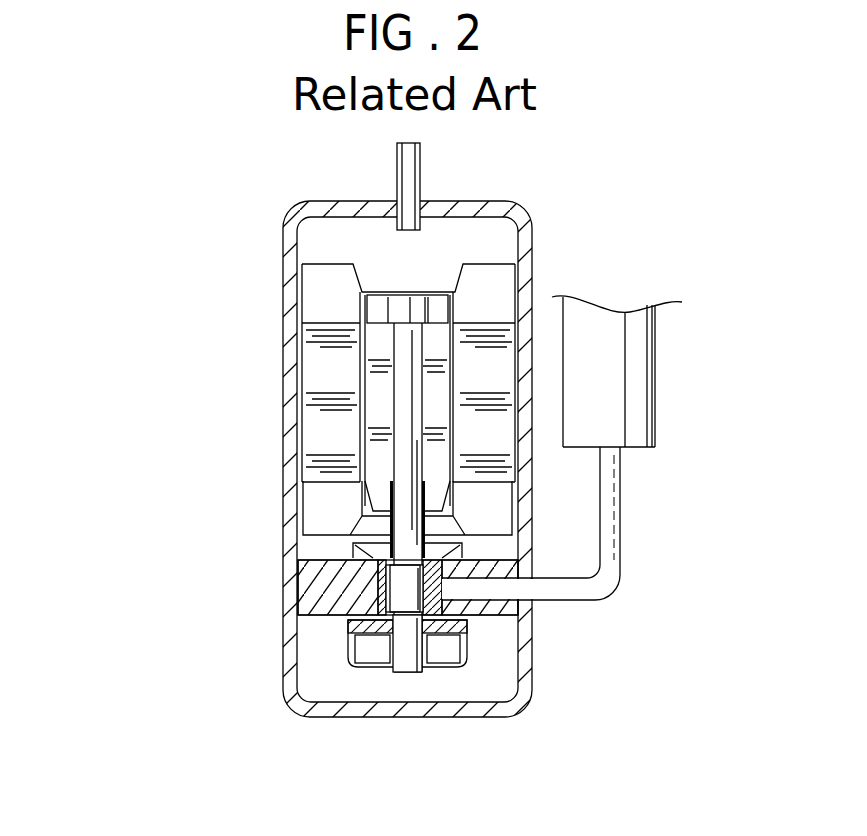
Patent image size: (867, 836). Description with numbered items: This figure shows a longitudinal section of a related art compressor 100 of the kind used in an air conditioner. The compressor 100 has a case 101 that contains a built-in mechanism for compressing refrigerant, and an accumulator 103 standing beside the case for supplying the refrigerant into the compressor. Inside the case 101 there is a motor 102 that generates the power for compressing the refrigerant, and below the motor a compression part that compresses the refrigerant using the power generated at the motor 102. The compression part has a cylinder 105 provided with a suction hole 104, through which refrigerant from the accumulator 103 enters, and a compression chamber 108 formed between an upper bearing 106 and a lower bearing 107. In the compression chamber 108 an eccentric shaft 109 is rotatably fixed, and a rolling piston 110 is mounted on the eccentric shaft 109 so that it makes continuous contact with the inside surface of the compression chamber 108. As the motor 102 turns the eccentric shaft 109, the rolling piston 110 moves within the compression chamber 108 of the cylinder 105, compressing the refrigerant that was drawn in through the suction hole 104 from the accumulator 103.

The compressor 100 is at (247, 250).
The case 101 is at (291, 380).
The motor 102 is at (487, 360).
The accumulator 103 is at (625, 377).
The suction hole 104 is at (463, 603).
The cylinder 105 is at (303, 590).
The upper bearing 106 is at (353, 546).
The lower bearing 107 is at (360, 628).
The compression chamber 108 is at (432, 607).
The eccentric shaft 109 is at (402, 603).
The rolling piston 110 is at (423, 605).